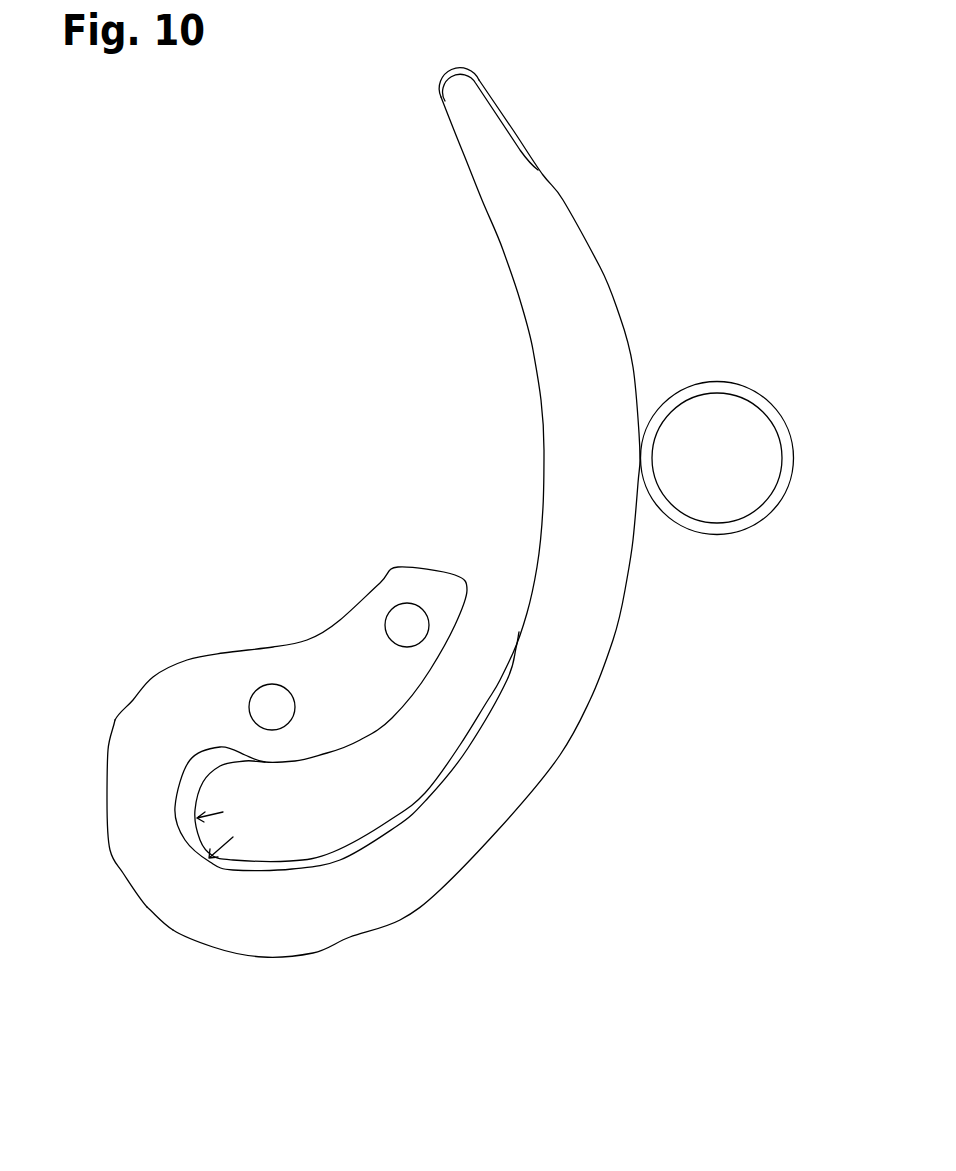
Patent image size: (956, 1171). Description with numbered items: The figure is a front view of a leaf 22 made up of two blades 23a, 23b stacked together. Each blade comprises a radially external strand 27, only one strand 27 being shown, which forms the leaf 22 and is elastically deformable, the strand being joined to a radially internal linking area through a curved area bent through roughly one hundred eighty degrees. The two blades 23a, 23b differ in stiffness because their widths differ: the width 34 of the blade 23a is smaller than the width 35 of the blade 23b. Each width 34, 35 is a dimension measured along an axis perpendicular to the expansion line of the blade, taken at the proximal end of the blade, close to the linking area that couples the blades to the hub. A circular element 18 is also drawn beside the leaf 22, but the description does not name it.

The leaf 22 is at (656, 617).
The strand 27 is at (562, 480).
The blade 23a is at (512, 124).
The blade 23b is at (508, 142).
The shaft 18 is at (748, 485).
The width 35 is at (116, 855).
The width 34 is at (163, 929).